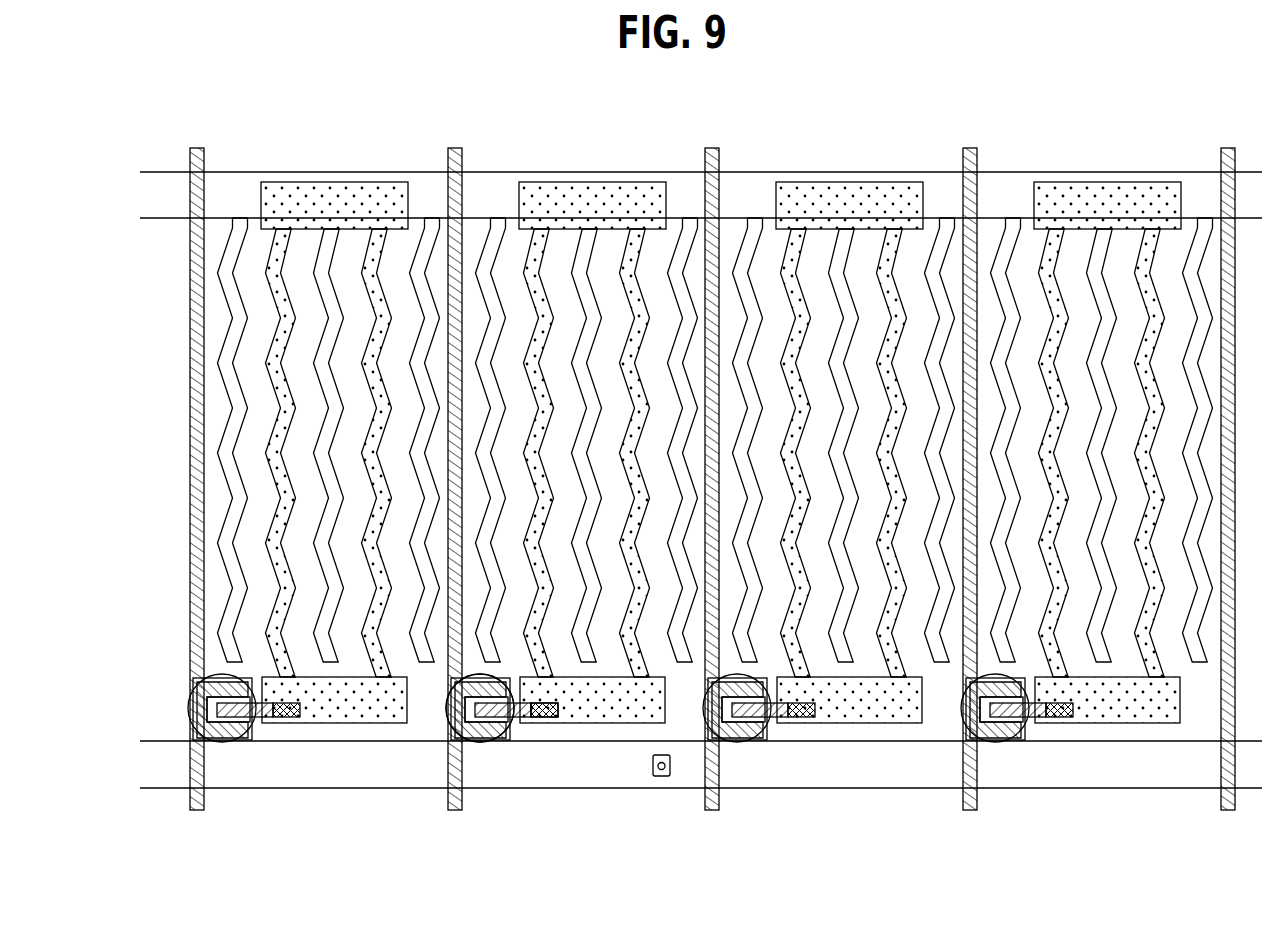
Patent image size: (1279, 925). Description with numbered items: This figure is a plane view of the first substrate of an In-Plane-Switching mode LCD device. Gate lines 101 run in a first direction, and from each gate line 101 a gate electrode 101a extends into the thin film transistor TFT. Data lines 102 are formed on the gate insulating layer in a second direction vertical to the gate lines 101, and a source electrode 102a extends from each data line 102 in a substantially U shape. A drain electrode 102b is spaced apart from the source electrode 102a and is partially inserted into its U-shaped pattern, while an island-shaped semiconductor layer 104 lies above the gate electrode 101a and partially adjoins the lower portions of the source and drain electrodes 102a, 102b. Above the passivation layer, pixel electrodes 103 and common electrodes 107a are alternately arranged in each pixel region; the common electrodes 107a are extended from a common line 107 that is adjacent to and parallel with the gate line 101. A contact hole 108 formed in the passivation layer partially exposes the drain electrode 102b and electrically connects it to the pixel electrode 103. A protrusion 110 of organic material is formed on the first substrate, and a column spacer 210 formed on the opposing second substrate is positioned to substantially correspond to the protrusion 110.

The gate line 101 is at (388, 763).
The gate electrode 101a is at (232, 738).
The data line 102 is at (195, 148).
The source electrode 102a is at (237, 678).
The drain electrode 102b is at (256, 704).
The pixel electrode 103 is at (275, 385).
The semiconductor layer 104 is at (492, 743).
The common line 107 is at (424, 194).
The common electrode 107a is at (235, 332).
The contact hole 108 is at (540, 720).
The protrusion 110 is at (653, 767).
The column spacer 210 is at (663, 778).
The thin film transistor TFT is at (333, 762).